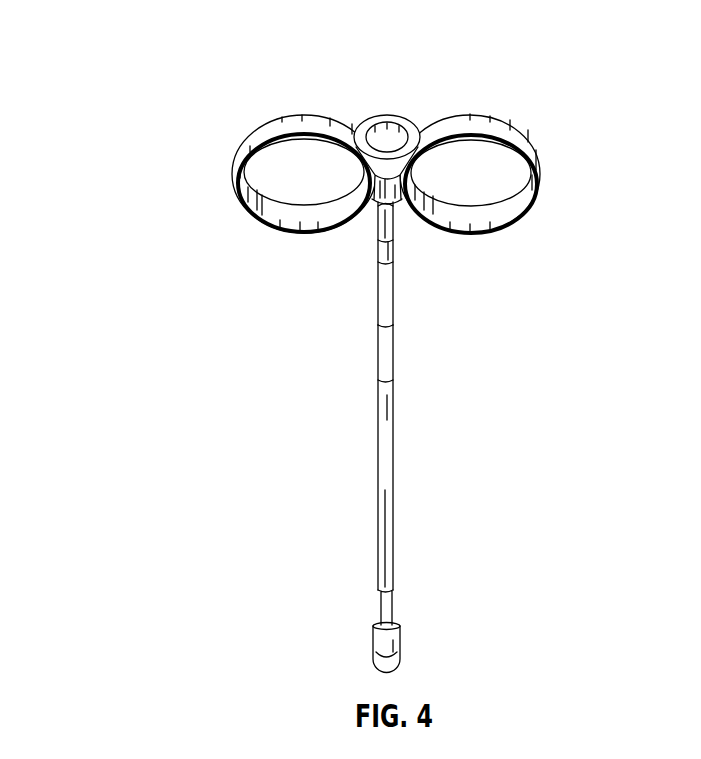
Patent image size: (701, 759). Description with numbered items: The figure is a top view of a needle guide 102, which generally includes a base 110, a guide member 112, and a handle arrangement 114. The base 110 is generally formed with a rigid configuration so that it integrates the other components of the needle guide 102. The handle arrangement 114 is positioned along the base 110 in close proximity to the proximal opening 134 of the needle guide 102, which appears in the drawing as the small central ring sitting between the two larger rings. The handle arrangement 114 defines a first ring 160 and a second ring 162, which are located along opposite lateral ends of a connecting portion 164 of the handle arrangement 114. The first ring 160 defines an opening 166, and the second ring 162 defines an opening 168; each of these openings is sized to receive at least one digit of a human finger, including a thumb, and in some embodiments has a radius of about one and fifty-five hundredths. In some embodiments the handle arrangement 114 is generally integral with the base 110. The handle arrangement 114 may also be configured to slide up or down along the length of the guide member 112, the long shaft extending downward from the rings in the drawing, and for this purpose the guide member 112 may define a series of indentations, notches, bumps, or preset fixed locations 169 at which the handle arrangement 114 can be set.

The needle guide 102 is at (155, 88).
The base 110 is at (435, 105).
The guide member 112 is at (384, 410).
The handle arrangement 114 is at (290, 303).
The proximal opening 134 is at (373, 108).
The first ring 160 is at (283, 125).
The second ring 162 is at (472, 152).
The connecting portion 164 is at (373, 203).
The opening 166 is at (268, 178).
The opening 168 is at (493, 208).
The preset fixed locations 169 is at (422, 325).